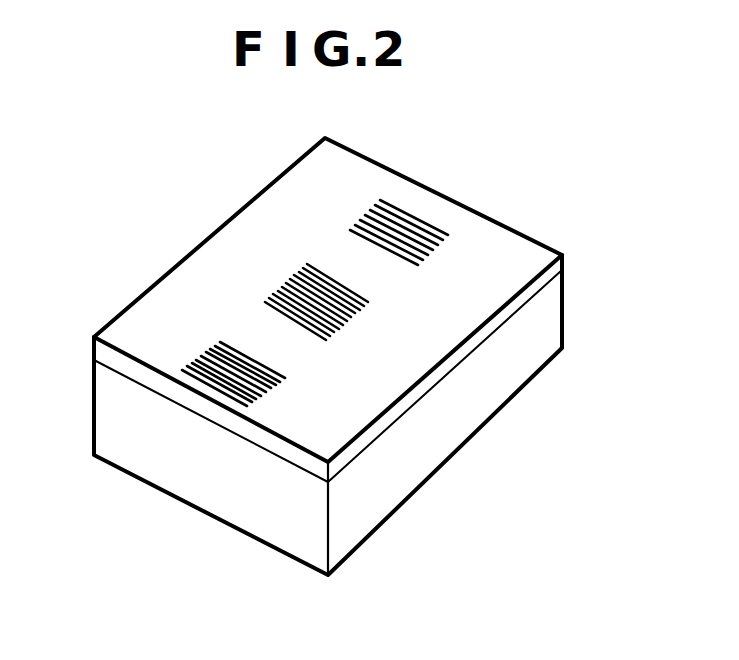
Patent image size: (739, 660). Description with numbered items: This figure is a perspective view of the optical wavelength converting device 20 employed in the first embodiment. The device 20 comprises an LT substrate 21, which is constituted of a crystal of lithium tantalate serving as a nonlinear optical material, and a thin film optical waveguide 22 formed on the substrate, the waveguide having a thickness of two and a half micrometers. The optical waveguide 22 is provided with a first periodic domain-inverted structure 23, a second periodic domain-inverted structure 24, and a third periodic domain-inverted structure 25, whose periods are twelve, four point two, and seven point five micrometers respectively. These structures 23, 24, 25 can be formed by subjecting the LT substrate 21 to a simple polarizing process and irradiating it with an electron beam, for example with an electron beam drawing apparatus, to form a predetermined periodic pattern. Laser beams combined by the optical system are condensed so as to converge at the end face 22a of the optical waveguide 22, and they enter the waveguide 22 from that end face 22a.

The optical wavelength converting device 20 is at (505, 170).
The LT substrate 21 is at (457, 438).
The thin film optical waveguide 22 is at (552, 270).
The end face 22a is at (132, 373).
The first periodic domain-inverted structure 23 is at (206, 356).
The second periodic domain-inverted structure 24 is at (286, 291).
The third periodic domain-inverted structure 25 is at (372, 217).